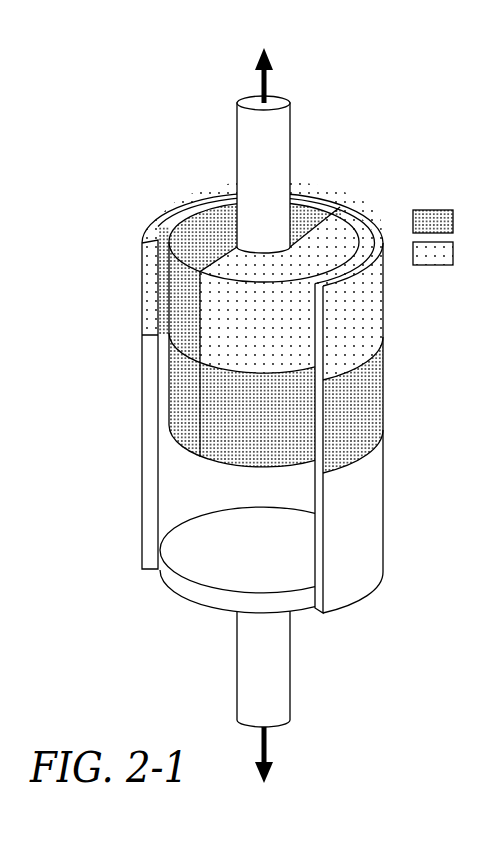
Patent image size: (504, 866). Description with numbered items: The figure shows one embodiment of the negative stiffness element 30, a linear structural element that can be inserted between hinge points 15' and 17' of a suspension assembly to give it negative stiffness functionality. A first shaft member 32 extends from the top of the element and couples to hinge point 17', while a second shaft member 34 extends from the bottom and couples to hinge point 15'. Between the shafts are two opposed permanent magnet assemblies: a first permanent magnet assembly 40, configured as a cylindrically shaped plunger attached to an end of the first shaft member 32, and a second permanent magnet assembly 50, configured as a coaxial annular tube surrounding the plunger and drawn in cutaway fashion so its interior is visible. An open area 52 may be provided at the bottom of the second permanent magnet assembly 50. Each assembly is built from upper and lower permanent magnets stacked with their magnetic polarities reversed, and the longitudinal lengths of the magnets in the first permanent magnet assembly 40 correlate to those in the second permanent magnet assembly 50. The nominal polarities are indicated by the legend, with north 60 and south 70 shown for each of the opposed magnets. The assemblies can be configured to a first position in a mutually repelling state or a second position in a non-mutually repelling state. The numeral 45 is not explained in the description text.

The negative stiffness element 30 is at (122, 352).
The first shaft member 32 is at (237, 153).
The second shaft member 34 is at (237, 652).
The first permanent magnet assembly 40 is at (197, 458).
The external element 45 is at (503, 417).
The second permanent magnet assembly 50 is at (142, 287).
The open area 52 is at (276, 503).
The north magnetic polarity 60 is at (322, 337).
The south magnetic polarity 70 is at (314, 280).
The hinge point 17' is at (268, 60).
The hinge point 15' is at (265, 770).